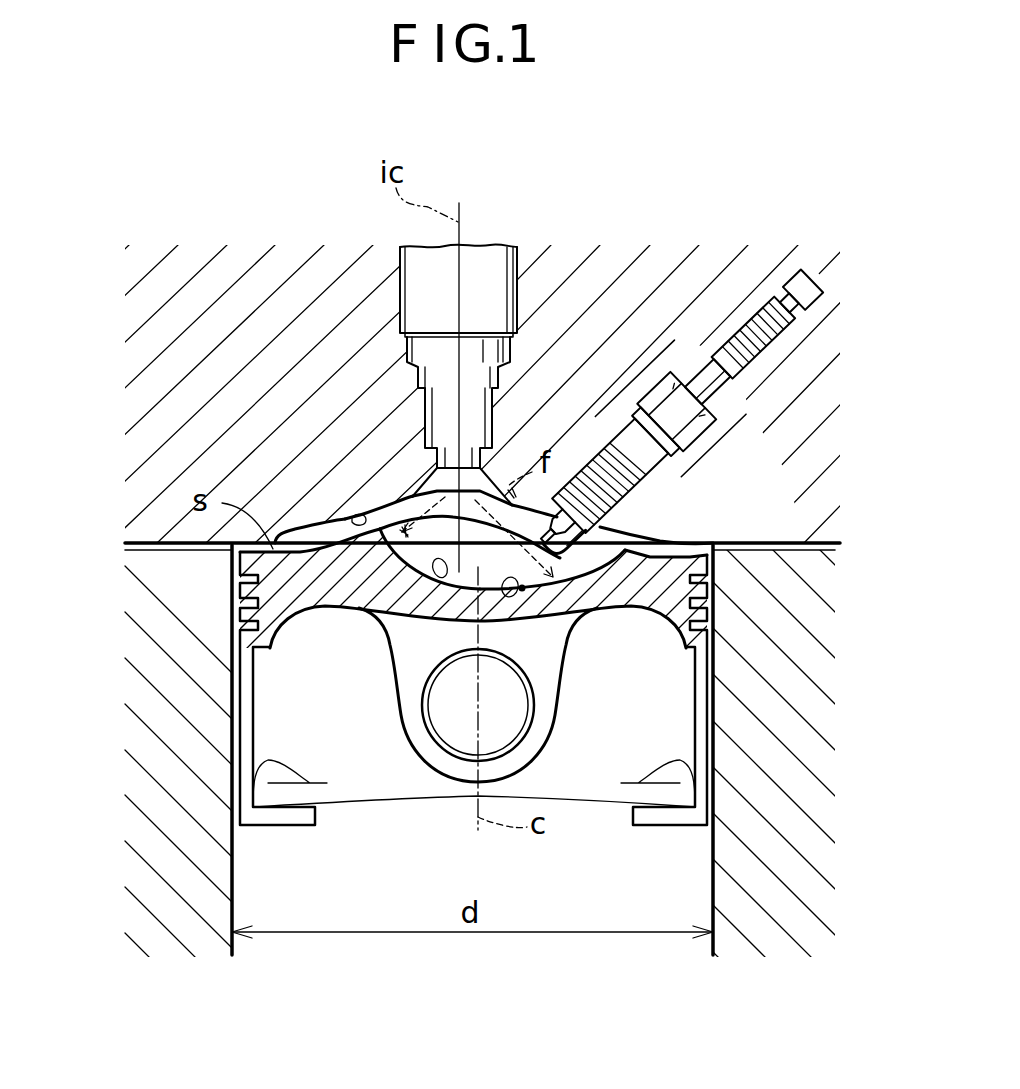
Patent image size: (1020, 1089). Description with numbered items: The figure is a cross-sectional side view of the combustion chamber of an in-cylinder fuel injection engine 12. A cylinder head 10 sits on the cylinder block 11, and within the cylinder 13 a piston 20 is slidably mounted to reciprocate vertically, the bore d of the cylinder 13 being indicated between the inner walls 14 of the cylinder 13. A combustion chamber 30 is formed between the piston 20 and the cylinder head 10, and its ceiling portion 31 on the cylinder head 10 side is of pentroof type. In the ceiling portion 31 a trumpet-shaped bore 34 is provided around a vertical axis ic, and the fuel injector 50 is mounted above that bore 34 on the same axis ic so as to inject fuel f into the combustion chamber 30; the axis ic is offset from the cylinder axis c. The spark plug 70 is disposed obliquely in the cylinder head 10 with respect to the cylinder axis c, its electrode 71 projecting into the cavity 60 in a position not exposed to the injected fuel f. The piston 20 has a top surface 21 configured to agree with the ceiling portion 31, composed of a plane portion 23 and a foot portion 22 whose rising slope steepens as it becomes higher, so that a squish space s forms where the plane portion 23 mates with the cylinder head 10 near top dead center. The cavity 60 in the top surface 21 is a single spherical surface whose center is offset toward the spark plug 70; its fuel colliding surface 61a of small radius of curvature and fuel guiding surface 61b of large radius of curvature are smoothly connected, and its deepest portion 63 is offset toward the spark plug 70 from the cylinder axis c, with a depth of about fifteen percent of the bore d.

The cylinder head 10 is at (175, 393).
The cylinder block 11 is at (160, 720).
The in-cylinder fuel injection engine 12 is at (640, 210).
The cylinder 13 is at (243, 895).
The inner wall of the cylinder 14 is at (714, 845).
The piston 20 is at (714, 567).
The top surface 21 is at (487, 497).
The foot portion 22 is at (273, 549).
The plane portion 23 is at (692, 556).
The combustion chamber 30 is at (393, 513).
The ceiling portion 31 is at (347, 540).
The trumpet-shaped bore 34 is at (432, 485).
The fuel injector 50 is at (496, 257).
The cavity 60 is at (388, 612).
The fuel colliding surface 61a is at (613, 540).
The fuel guiding surface 61b is at (415, 618).
The deepest portion 63 is at (523, 589).
The spark plug 70 is at (808, 283).
The electrode 71 is at (585, 478).